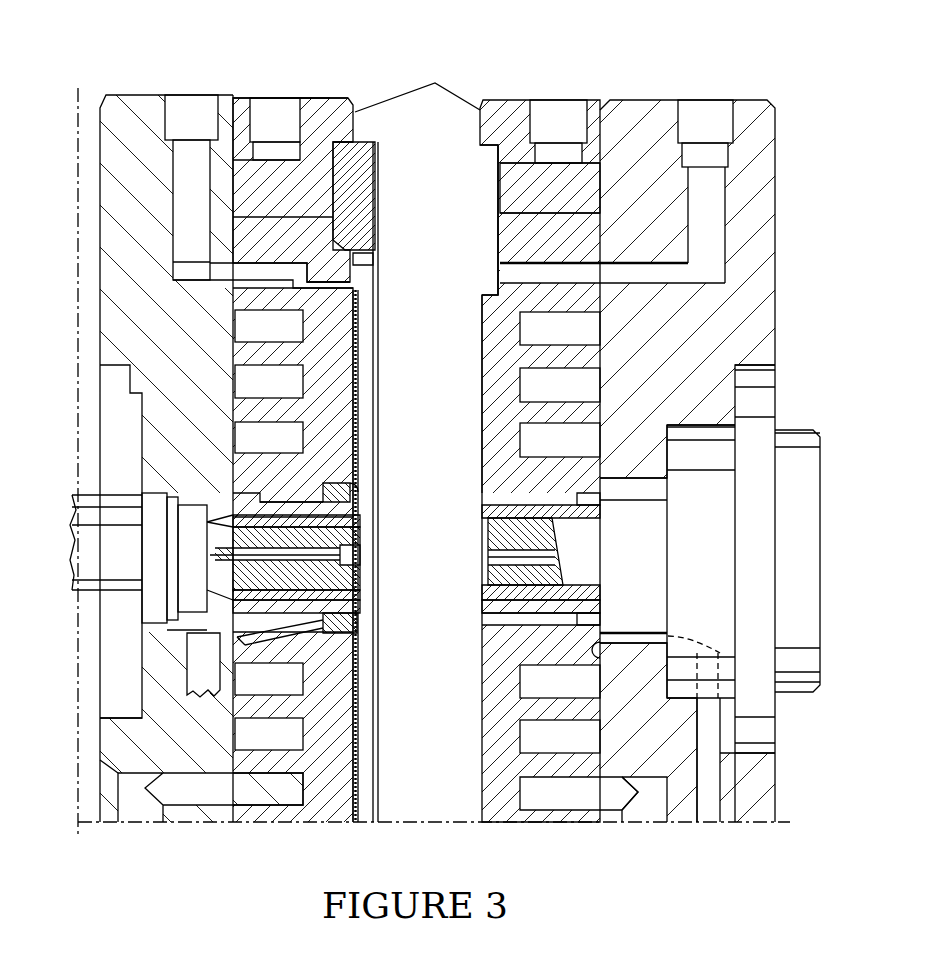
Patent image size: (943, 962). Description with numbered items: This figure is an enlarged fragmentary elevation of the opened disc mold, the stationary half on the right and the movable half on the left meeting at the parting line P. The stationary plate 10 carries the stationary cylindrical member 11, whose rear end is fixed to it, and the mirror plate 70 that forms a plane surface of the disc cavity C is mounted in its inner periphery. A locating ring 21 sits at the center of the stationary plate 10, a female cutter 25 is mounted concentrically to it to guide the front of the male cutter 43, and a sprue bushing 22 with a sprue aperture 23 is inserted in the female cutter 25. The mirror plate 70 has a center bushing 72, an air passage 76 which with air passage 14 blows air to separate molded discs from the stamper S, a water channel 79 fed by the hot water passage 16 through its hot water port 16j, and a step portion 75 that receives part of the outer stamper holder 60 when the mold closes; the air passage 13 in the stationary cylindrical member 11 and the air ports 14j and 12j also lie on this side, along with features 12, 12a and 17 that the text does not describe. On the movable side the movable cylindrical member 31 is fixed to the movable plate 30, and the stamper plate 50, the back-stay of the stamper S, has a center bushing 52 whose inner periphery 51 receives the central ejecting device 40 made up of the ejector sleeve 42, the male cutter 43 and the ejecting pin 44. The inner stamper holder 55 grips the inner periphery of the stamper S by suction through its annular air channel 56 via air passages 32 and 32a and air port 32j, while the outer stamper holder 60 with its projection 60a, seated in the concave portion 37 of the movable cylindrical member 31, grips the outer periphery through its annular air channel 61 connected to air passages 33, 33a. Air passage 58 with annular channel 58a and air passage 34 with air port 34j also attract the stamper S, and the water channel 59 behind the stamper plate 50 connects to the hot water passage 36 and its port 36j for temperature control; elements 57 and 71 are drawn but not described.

The stationary plate 10 is at (716, 323).
The stationary cylindrical member 11 is at (512, 102).
The flange 12 is at (632, 640).
The bore 12a is at (713, 790).
The air port 12j is at (600, 652).
The air passage 13 is at (550, 188).
The air passage 14 is at (642, 280).
The air port 14j is at (598, 283).
The hot water passage 16 is at (606, 822).
The hot water port 16j is at (603, 822).
The slot 17 is at (480, 168).
The locating ring 21 is at (800, 460).
The sprue bushing 22 is at (485, 604).
The sprue aperture 23 is at (498, 558).
The female cutter 25 is at (528, 620).
The movable plate 30 is at (111, 140).
The movable cylindrical member 31 is at (356, 118).
The air passage 32 is at (196, 680).
The air passage 32a is at (188, 772).
The air port 32j is at (175, 637).
The air passage 33 is at (471, 460).
The air passage 33a is at (297, 102).
The air passage 34 is at (215, 282).
The air port 34j is at (233, 312).
The hot water passage 36 is at (195, 805).
The hot water port 36j is at (255, 805).
The concave portion 37 is at (350, 185).
The central ejecting device 40 is at (93, 552).
The ejector sleeve 42 is at (360, 520).
The male cutter 43 is at (345, 556).
The ejecting pin 44 is at (362, 610).
The stamper plate 50 is at (340, 386).
The inner periphery 51 is at (300, 500).
The center bushing 52 is at (275, 505).
The inner stamper holder 55 is at (352, 492).
The annular air channel 56 is at (360, 630).
The spring 57 is at (322, 640).
The air passage 58 is at (318, 275).
The annular air channel 58a is at (327, 306).
The water channel 59 is at (245, 380).
The outer peripheral stamper holder 60 is at (365, 217).
The projection 60a is at (368, 262).
The annular air channel 61 is at (356, 130).
The mirror plate 70 is at (515, 368).
The tube wall 71 is at (505, 512).
The center bushing 72 is at (545, 505).
The step portion 75 is at (483, 247).
The air passage 76 is at (505, 272).
The water channel 79 is at (598, 385).
The disc cavity C is at (482, 457).
The parting line P is at (417, 84).
The stamper S is at (358, 428).